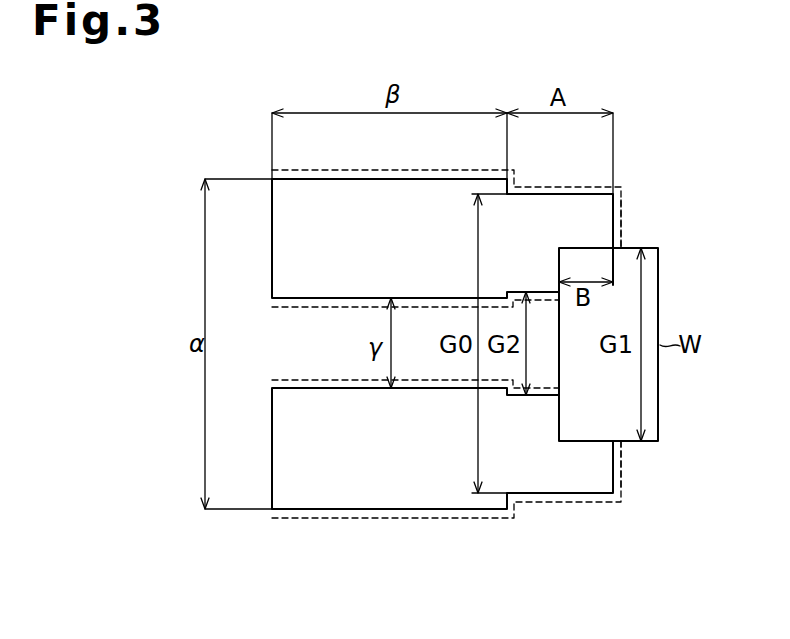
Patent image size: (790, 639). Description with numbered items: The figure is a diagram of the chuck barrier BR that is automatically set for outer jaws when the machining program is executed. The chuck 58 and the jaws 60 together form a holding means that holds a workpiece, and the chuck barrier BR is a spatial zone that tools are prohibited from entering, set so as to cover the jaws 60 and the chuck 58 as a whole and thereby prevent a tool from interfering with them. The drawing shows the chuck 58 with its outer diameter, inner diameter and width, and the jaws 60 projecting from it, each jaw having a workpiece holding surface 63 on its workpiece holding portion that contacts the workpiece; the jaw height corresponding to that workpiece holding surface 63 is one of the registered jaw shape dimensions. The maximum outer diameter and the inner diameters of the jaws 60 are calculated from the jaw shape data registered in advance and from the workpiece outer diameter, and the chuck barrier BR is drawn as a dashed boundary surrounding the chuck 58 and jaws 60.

The chuck 58 is at (280, 246).
The workpiece holding surface 63 is at (590, 249).
The jaw 60 is at (609, 225).
The chuck barrier BR is at (375, 168).